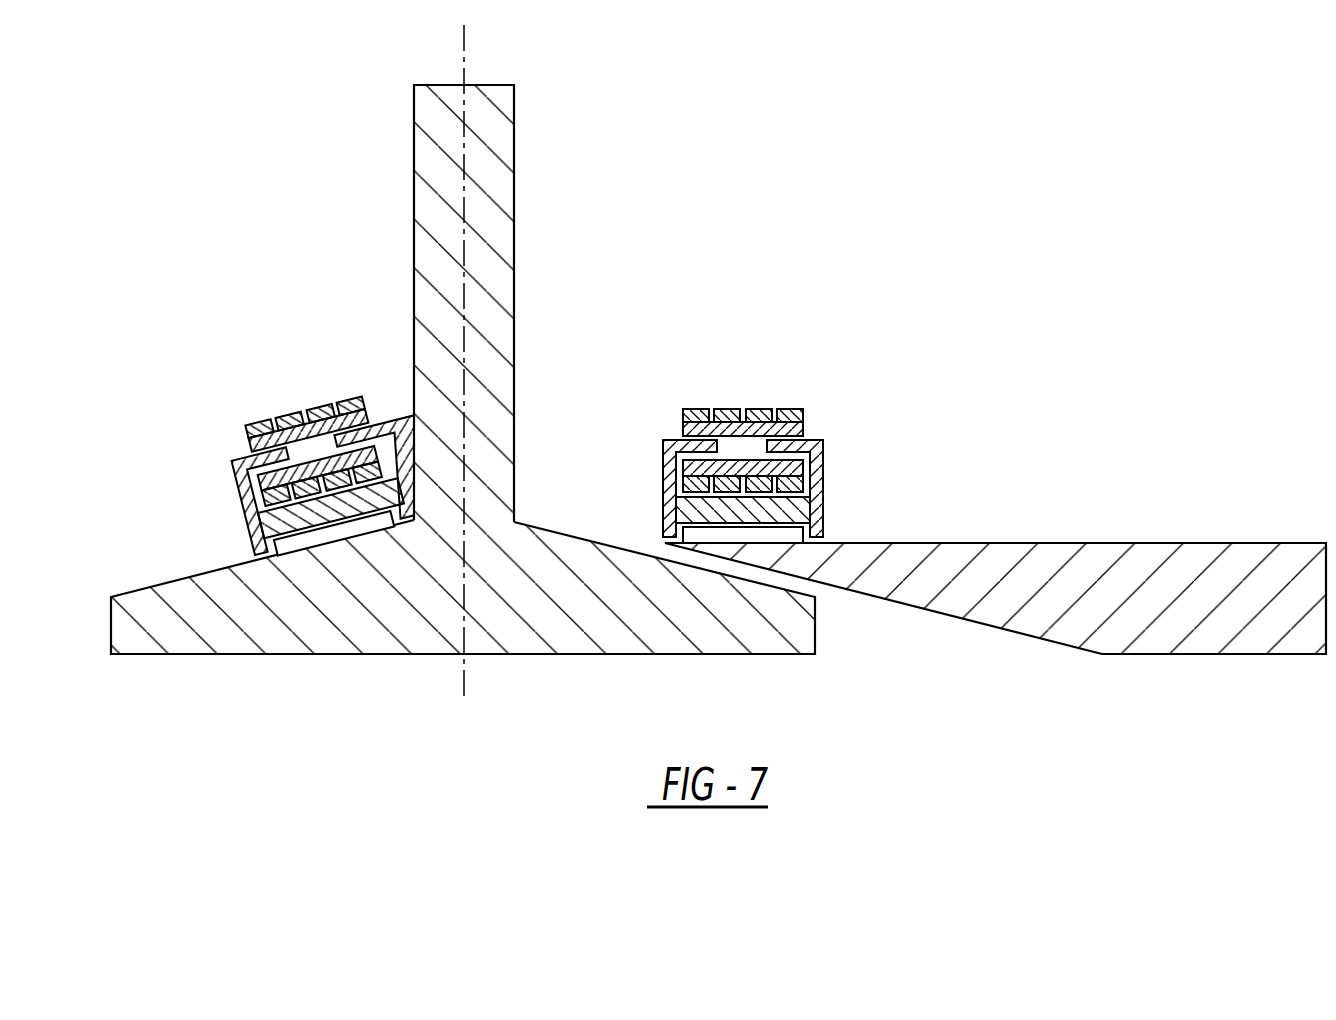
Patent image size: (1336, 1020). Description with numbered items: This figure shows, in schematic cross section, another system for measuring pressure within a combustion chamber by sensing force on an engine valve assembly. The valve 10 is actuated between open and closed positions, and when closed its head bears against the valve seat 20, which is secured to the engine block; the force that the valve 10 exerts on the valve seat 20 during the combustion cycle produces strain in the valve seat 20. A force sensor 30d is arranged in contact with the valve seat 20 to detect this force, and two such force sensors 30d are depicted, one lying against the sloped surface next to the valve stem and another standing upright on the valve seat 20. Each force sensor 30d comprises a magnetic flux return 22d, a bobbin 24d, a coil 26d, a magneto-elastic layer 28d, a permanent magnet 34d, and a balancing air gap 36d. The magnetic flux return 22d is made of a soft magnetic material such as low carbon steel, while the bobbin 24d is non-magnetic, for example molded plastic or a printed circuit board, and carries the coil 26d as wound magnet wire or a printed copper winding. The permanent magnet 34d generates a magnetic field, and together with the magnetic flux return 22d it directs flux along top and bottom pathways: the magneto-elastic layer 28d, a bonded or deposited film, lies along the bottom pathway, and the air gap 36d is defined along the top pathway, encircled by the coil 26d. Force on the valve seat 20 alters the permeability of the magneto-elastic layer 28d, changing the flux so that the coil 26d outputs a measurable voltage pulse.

The valve 10 is at (715, 622).
The valve seat 20 is at (1162, 628).
The force sensor 30d is at (212, 475).
The magnetic flux return 22d is at (815, 485).
The bobbin 24d is at (819, 372).
The coil 26d is at (793, 483).
The magneto-elastic layer 28d is at (793, 535).
The permanent magnet 34d is at (717, 510).
The balancing air gap 36d is at (747, 448).